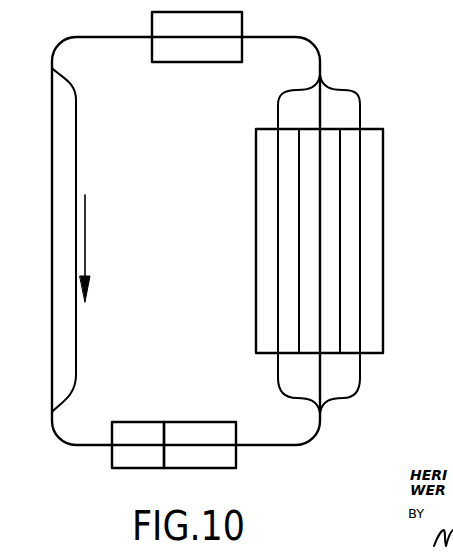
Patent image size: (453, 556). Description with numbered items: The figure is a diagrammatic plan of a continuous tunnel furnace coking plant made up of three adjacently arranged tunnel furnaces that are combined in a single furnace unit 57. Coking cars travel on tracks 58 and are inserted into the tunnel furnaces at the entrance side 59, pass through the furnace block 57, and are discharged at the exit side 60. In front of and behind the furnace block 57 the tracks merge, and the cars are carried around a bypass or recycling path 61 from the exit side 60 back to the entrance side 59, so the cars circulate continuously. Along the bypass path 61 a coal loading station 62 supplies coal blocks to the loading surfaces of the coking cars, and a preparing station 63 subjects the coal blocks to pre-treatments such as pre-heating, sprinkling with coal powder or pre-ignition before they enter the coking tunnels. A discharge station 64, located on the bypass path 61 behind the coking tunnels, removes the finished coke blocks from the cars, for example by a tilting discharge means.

The furnace unit 57 is at (310, 185).
The tracks 58 is at (323, 400).
The entrance side 59 is at (332, 353).
The exit side 60 is at (307, 128).
The bypass path 61 is at (52, 320).
The coal loading station 62 is at (132, 458).
The preparing station 63 is at (212, 462).
The discharge station 64 is at (233, 26).